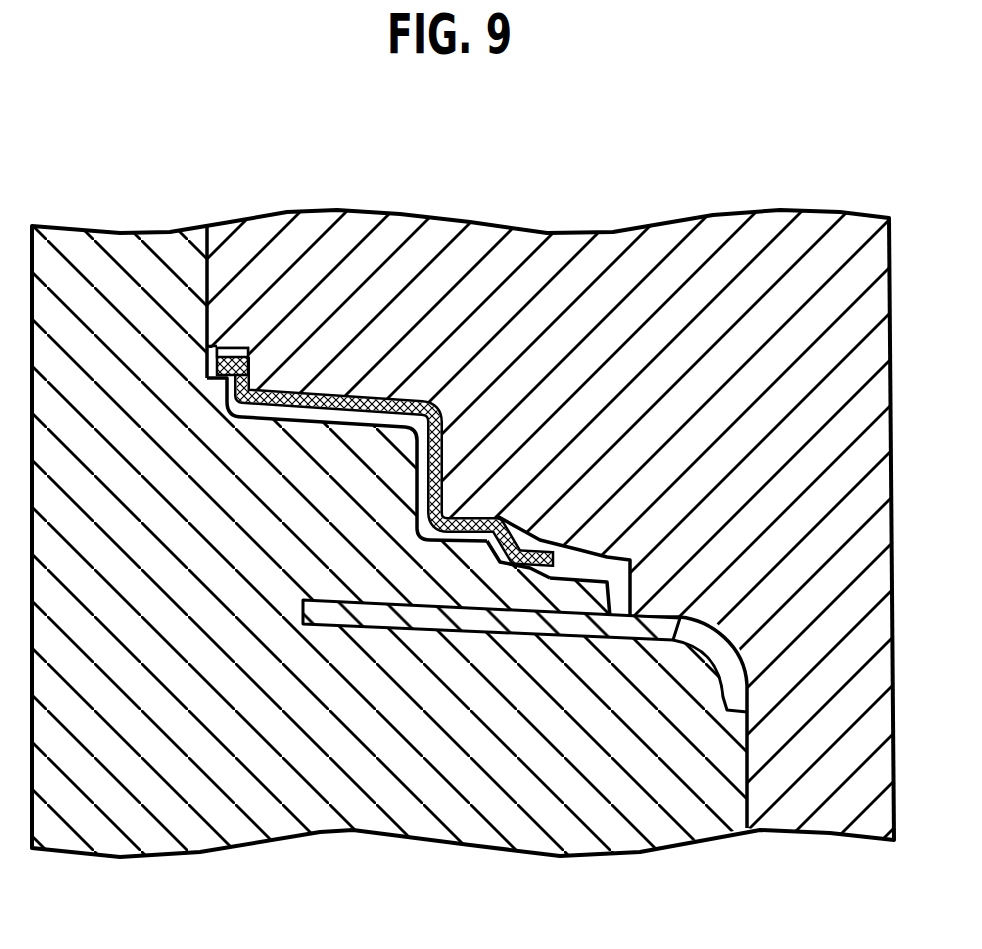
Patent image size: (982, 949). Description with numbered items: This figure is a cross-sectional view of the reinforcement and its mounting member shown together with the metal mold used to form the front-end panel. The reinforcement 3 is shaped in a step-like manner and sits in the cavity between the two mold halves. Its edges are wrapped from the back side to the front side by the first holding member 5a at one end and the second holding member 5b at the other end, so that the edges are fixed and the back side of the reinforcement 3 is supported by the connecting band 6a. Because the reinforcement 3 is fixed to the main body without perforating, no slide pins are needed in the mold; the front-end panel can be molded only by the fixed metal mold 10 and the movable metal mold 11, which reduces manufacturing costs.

The reinforcement 3 is at (350, 388).
The first holding member 5a is at (513, 522).
The second holding member 5b is at (209, 345).
The connecting band 6a is at (461, 560).
The fixed metal mold 10 is at (792, 257).
The movable metal mold 11 is at (206, 812).